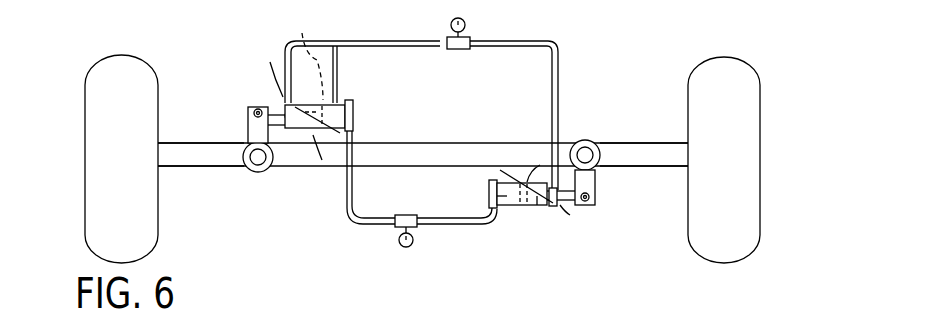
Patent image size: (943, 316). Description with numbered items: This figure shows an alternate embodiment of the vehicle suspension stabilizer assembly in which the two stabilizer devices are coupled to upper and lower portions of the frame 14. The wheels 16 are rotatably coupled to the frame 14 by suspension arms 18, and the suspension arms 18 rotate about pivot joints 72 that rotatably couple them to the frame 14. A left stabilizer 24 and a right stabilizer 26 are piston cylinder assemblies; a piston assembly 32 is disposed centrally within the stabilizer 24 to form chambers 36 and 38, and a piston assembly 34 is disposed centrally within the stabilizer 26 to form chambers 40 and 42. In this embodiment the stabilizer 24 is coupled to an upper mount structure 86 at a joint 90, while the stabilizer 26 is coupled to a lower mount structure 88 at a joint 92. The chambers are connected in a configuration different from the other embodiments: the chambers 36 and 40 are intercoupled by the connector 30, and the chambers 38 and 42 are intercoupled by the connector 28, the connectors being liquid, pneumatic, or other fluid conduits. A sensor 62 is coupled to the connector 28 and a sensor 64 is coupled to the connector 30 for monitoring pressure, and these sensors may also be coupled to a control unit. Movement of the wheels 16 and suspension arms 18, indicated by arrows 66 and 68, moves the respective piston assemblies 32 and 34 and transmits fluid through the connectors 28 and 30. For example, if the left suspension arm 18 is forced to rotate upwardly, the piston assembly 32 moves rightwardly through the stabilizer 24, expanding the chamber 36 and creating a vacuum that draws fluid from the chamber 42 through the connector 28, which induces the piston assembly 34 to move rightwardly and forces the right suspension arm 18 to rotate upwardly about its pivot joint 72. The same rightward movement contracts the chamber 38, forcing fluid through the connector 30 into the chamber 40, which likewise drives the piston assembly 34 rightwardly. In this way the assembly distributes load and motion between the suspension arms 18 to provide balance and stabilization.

The frame 14 is at (427, 142).
The wheels 16 is at (83, 160).
The suspension arms 18 is at (200, 168).
The stabilizer 24 is at (364, 114).
The stabilizer 26 is at (486, 196).
The connector 28 is at (518, 41).
The connector 30 is at (445, 228).
The piston assembly 32 is at (305, 53).
The piston assembly 34 is at (523, 205).
The chamber 36 is at (287, 58).
The chamber 38 is at (337, 42).
The chamber 40 is at (507, 208).
The chamber 42 is at (537, 207).
The sensor 62 is at (466, 22).
The sensor 64 is at (403, 248).
The arrows 66 is at (168, 178).
The arrows 68 is at (252, 97).
The pivot joints 72 is at (257, 178).
The upper mount structure 86 is at (313, 135).
The lower mount structure 88 is at (527, 182).
The joint 90 is at (283, 97).
The joint 92 is at (560, 205).